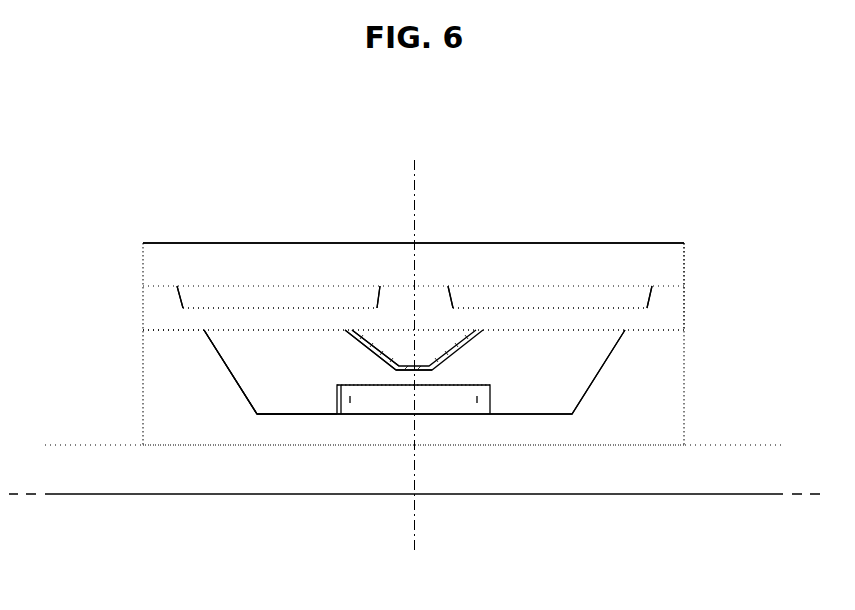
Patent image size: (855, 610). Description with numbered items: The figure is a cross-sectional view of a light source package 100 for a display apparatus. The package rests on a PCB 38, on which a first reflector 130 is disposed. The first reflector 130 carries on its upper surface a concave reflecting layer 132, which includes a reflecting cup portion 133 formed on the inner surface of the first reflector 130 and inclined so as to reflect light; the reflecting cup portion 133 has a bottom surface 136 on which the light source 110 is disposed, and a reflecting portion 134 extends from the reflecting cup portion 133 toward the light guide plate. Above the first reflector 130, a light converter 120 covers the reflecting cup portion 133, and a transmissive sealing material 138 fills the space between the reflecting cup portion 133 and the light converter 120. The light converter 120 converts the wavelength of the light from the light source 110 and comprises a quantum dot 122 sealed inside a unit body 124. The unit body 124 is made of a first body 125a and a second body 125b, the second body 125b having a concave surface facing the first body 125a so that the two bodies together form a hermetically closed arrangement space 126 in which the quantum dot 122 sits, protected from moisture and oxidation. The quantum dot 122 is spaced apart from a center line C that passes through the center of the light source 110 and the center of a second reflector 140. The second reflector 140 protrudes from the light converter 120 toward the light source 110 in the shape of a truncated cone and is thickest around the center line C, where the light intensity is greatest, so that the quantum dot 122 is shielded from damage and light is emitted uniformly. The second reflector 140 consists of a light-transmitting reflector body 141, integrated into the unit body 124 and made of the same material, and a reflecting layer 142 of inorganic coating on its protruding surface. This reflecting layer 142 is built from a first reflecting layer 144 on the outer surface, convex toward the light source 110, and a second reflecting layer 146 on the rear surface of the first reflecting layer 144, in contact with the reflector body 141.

The PCB 38 is at (520, 480).
The light source package 100 is at (110, 320).
The light source 110 is at (362, 403).
The light converter 120 is at (482, 264).
The quantum dot 122 is at (507, 302).
The unit body 124 is at (772, 248).
The first body 125a is at (684, 258).
The second body 125b is at (684, 313).
The arrangement space 126 is at (618, 310).
The first reflector 130 is at (630, 420).
The reflecting layer 132 is at (226, 460).
The reflecting cup portion 133 is at (229, 363).
The reflecting portion 134 is at (163, 329).
The bottom surface 136 is at (297, 481).
The transmissive sealing material 138 is at (547, 385).
The second reflector 140 is at (442, 374).
The reflector body 141 is at (419, 347).
The reflecting layer 142 is at (406, 371).
The first reflecting layer 144 is at (358, 340).
The second reflecting layer 146 is at (380, 362).
The center line C is at (413, 345).